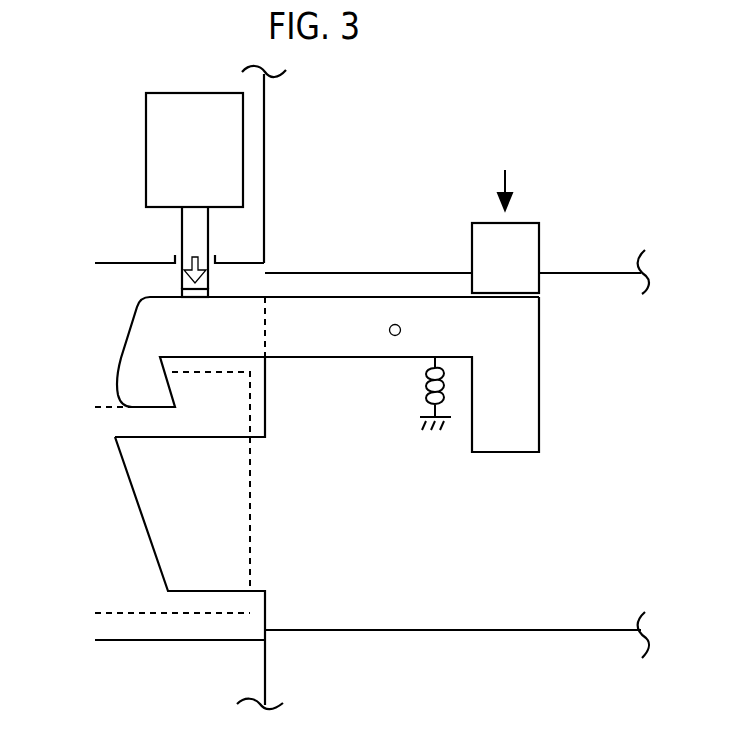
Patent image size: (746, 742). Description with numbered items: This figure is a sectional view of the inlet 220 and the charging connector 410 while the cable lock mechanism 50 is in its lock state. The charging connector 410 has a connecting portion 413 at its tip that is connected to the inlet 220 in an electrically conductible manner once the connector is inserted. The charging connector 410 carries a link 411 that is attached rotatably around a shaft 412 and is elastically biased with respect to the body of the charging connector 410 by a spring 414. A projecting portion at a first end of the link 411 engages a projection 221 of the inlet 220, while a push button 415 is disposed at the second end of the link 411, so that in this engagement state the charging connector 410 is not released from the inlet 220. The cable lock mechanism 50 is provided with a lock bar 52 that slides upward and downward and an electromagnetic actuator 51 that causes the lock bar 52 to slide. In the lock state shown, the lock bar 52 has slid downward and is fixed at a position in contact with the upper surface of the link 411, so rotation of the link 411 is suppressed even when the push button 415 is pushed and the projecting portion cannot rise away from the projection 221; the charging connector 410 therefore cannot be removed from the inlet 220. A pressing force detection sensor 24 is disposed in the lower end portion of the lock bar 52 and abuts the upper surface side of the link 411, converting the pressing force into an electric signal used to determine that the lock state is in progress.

The pressing force detection sensor 24 is at (182, 294).
The cable lock mechanism 50 is at (66, 132).
The electromagnetic actuator 51 is at (146, 152).
The lock bar 52 is at (182, 241).
The inlet 220 is at (156, 614).
The projection 221 is at (183, 387).
The charging connector 410 is at (514, 654).
The link 411 is at (122, 353).
The shaft 412 is at (395, 323).
The connecting portion 413 is at (145, 533).
The spring 414 is at (425, 390).
The push button 415 is at (527, 222).